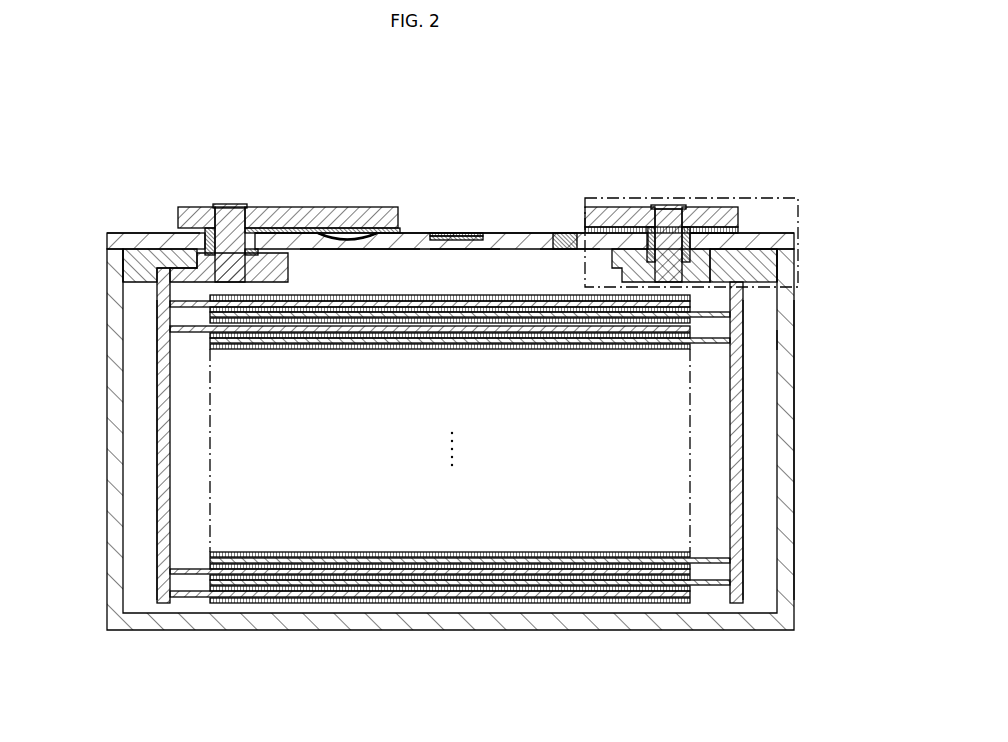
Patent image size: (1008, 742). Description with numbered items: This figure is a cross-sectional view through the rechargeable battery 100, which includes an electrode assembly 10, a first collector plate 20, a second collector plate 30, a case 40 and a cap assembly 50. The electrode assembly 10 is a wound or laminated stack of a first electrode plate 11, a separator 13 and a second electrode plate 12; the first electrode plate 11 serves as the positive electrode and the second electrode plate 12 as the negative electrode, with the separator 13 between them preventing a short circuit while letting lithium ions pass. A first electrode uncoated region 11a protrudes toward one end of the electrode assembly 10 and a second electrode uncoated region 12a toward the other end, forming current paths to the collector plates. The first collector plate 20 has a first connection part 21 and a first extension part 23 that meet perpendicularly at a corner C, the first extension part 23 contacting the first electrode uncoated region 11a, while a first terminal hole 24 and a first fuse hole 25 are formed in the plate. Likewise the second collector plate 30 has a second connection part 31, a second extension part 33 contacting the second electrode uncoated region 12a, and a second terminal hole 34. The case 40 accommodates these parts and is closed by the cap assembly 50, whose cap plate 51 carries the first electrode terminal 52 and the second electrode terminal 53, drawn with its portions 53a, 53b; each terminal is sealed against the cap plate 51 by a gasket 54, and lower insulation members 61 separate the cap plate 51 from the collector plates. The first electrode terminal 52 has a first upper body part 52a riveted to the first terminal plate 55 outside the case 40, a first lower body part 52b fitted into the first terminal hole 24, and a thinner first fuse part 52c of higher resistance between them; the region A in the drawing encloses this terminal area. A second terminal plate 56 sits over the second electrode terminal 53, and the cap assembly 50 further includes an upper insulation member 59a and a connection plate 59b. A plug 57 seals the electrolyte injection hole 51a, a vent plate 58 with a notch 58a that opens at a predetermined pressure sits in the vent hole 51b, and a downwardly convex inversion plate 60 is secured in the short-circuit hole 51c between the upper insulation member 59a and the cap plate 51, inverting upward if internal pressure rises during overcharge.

The rechargeable battery 100 is at (797, 97).
The electrode assembly 10 is at (540, 616).
The first electrode plate 11 is at (620, 600).
The first electrode uncoated region 11a is at (712, 586).
The second electrode plate 12 is at (322, 598).
The second electrode uncoated region 12a is at (189, 598).
The separator 13 is at (415, 590).
The first collector plate 20 is at (754, 381).
The first connection part 21 is at (797, 235).
The first extension part 23 is at (750, 456).
The first terminal hole 24 is at (683, 284).
The first fuse hole 25 is at (745, 234).
The second collector plate 30 is at (148, 381).
The second connection part 31 is at (140, 233).
The second extension part 33 is at (153, 456).
The second terminal hole 34 is at (223, 282).
The case 40 is at (785, 340).
The cap assembly 50 is at (513, 146).
The cap plate 51 is at (520, 233).
The electrolyte injection hole 51a is at (562, 250).
The vent hole 51b is at (465, 250).
The short-circuit hole 51c is at (367, 250).
The first electrode terminal 52 is at (605, 134).
The first upper body part 52a is at (682, 235).
The first lower body part 52b is at (634, 232).
The first fuse part 52c is at (663, 205).
The second electrode terminal 53 is at (237, 206).
The negative terminal flange 53a is at (288, 262).
The negative terminal head 53b is at (222, 205).
The gasket 54 is at (182, 207).
The first terminal plate 55 is at (595, 207).
The second terminal plate 56 is at (308, 207).
The plug 57 is at (565, 233).
The vent plate 58 is at (465, 237).
The notch 58a is at (436, 233).
The upper insulation member 59a is at (396, 228).
The connection plate 59b is at (733, 229).
The inversion plate 60 is at (340, 234).
The lower insulation member 61 is at (122, 262).
The region A is at (797, 198).
The corner C is at (770, 252).